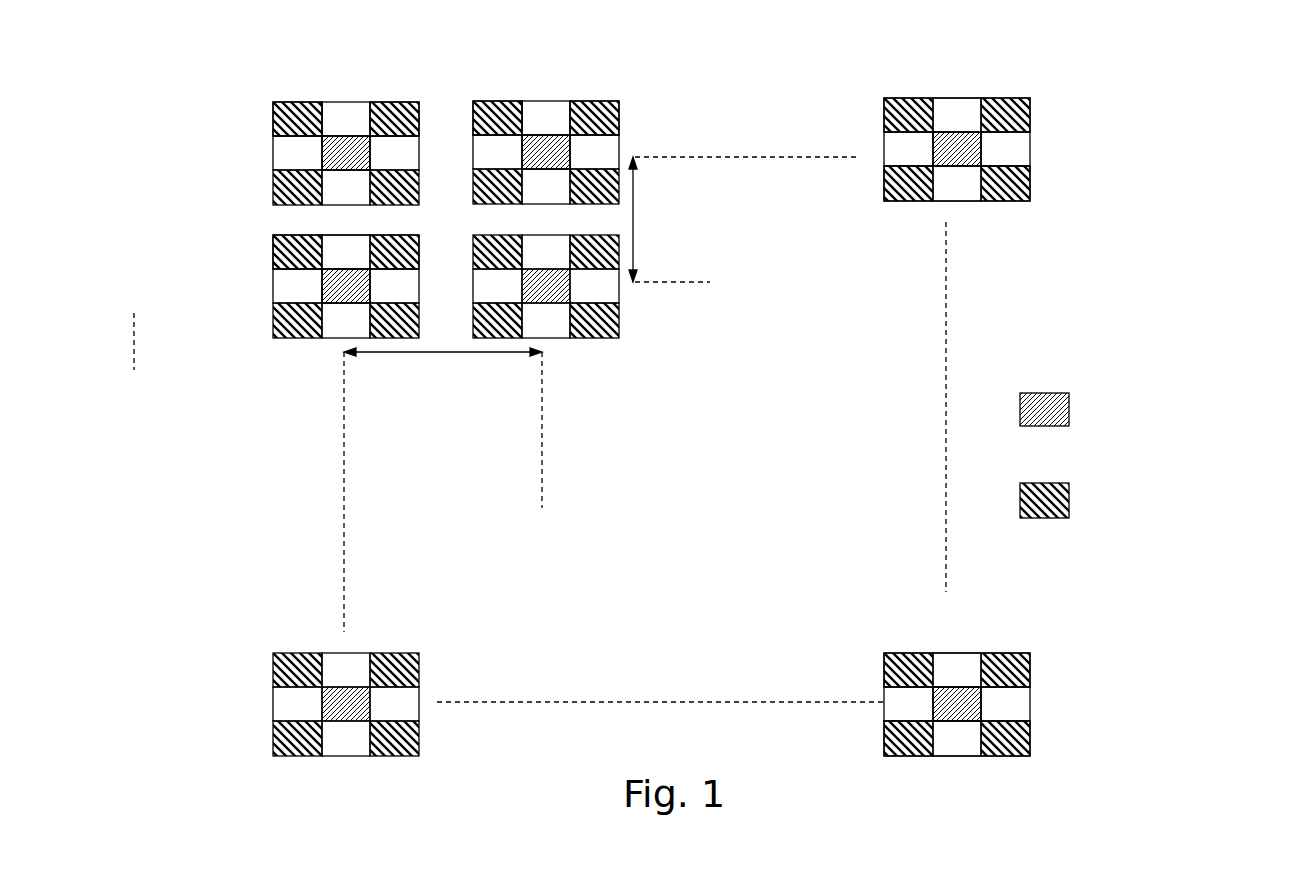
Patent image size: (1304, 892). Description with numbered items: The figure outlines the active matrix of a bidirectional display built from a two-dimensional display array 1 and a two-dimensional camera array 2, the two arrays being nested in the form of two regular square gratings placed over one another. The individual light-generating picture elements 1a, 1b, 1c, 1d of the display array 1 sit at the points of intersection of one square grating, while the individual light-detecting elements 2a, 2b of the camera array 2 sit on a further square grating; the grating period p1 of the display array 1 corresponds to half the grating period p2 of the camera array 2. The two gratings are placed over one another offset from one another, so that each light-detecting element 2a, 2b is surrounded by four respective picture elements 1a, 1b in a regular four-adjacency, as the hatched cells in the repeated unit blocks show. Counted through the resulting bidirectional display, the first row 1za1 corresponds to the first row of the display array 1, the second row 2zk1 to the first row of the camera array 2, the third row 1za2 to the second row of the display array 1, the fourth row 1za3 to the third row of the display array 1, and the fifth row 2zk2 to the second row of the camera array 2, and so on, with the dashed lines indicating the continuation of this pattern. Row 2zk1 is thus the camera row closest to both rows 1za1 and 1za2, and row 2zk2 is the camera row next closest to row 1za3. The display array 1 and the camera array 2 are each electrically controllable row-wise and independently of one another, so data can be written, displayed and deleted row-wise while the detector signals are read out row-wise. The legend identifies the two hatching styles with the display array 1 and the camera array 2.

The light-generating picture element 1a is at (303, 102).
The light-generating picture element 1b is at (400, 102).
The light-generating picture element 1c is at (503, 101).
The light-generating picture element 1d is at (612, 101).
The light-detecting element 2a is at (322, 154).
The light-detecting element 2b is at (583, 153).
The first row of the bidirectional display 1za1 is at (1036, 118).
The second row of the bidirectional display 2zk1 is at (1002, 151).
The third row of the bidirectional display 1za2 is at (1036, 186).
The fourth row of the bidirectional display 1za3 is at (268, 256).
The fifth row of the bidirectional display 2zk2 is at (298, 290).
The grating period of the display array p1 is at (649, 219).
The grating period of the camera array p2 is at (443, 368).
The display array 1 is at (1079, 500).
The camera array 2 is at (1079, 411).